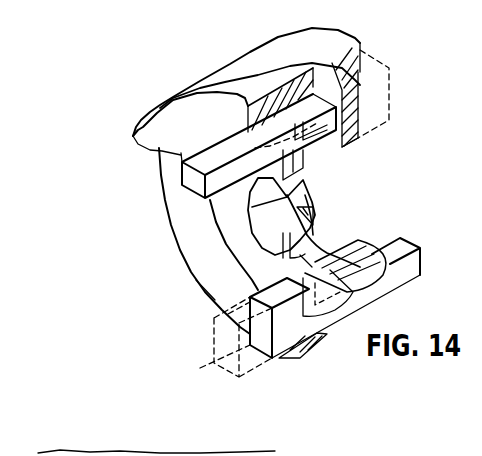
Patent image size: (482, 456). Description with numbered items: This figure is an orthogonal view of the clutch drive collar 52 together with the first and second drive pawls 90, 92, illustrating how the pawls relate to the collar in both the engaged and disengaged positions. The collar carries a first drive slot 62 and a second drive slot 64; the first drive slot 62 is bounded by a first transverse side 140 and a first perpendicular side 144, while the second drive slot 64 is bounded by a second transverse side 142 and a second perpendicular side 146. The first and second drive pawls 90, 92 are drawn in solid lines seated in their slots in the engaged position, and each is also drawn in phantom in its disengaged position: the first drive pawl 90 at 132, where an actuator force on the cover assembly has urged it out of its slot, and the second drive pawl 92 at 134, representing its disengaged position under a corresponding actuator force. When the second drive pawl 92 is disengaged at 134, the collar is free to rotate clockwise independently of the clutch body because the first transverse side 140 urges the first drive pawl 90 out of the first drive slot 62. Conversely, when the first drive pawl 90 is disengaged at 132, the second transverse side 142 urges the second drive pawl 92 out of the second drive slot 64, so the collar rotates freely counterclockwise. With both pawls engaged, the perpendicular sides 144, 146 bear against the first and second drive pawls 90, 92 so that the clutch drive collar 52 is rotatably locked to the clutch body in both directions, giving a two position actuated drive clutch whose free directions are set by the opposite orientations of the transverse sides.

The first drive pawl 90 is at (183, 180).
The first transverse side 140 is at (237, 138).
The phantom position of first drive pawl 132 is at (391, 85).
The first perpendicular side 144 is at (359, 142).
The first drive slot 62 is at (305, 163).
The second perpendicular side 146 is at (290, 253).
The second drive slot 64 is at (312, 237).
The clutch drive collar 52 is at (357, 243).
The second drive pawl 92 is at (408, 248).
The second transverse side 142 is at (215, 300).
The phantom position of second drive pawl 134 is at (213, 360).